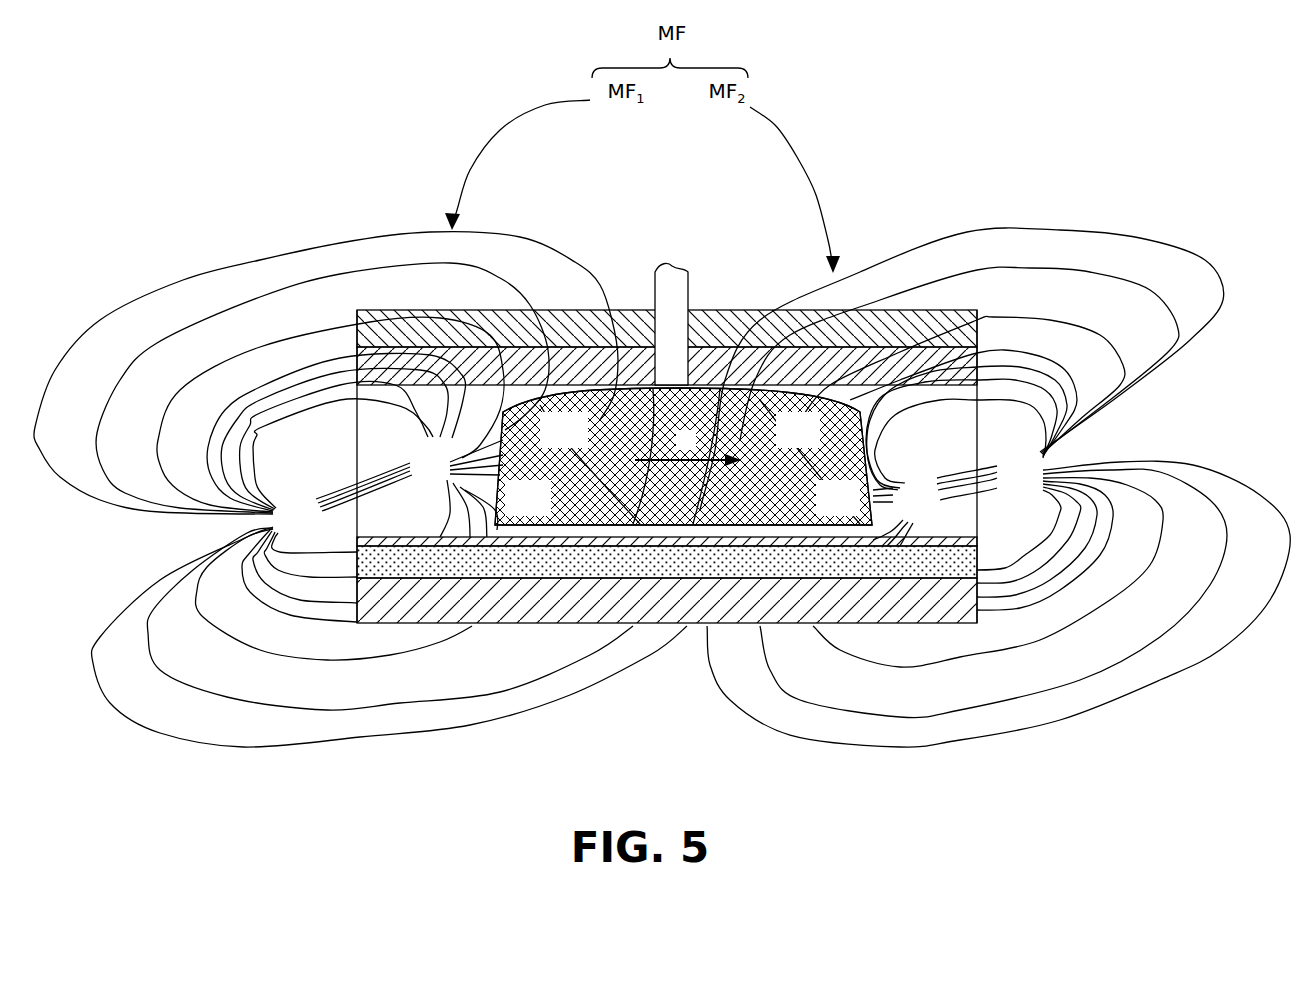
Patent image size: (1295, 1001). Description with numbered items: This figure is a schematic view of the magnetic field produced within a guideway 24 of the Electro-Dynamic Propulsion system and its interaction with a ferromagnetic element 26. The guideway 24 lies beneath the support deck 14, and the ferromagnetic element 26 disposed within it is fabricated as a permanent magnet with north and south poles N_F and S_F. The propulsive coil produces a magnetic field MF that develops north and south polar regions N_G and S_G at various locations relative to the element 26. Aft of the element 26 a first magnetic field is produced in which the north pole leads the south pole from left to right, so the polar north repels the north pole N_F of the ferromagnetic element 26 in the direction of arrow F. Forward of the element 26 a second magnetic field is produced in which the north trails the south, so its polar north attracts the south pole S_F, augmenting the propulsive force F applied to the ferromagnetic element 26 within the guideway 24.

The support deck 14 is at (622, 325).
The guideway 24 is at (368, 428).
The ferromagnetic element 26 is at (690, 507).